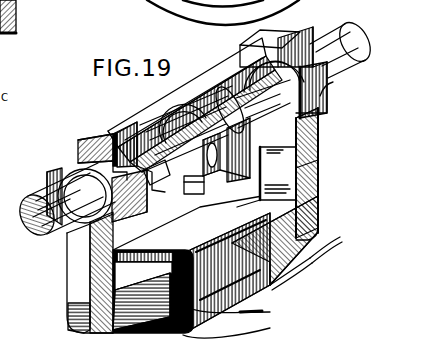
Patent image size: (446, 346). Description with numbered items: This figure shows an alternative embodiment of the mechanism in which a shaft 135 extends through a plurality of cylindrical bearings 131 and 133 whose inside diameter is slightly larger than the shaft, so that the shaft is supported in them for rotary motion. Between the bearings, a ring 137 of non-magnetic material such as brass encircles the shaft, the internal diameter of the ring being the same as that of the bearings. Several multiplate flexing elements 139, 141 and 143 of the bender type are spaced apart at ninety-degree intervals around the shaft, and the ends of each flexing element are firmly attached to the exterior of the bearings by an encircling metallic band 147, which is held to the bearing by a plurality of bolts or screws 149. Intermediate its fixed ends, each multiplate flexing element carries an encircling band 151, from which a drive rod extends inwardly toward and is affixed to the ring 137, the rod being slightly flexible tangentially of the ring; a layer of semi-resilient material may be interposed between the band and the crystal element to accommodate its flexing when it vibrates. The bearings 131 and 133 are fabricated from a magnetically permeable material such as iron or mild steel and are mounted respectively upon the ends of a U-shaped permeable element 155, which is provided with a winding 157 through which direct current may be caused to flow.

The cylindrical bearing 131 is at (63, 167).
The cylindrical bearing 133 is at (302, 48).
The shaft 135 is at (353, 41).
The ring 137 is at (316, 122).
The multiplate flexing element 139 is at (208, 74).
The multiplate flexing element 141 is at (318, 124).
The multiplate flexing element 143 is at (229, 154).
The encircling metallic band 147 is at (90, 135).
The bolts or screws 149 is at (333, 82).
The encircling band 151 is at (179, 102).
The U-shaped permeable element 155 is at (78, 280).
The winding 157 is at (190, 322).